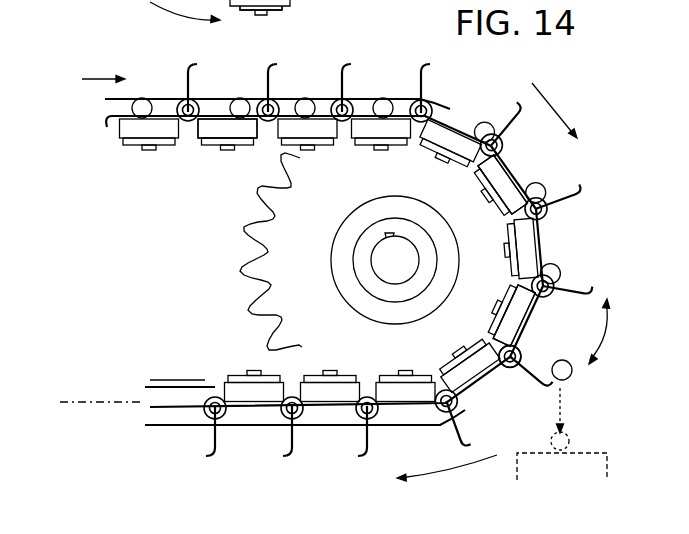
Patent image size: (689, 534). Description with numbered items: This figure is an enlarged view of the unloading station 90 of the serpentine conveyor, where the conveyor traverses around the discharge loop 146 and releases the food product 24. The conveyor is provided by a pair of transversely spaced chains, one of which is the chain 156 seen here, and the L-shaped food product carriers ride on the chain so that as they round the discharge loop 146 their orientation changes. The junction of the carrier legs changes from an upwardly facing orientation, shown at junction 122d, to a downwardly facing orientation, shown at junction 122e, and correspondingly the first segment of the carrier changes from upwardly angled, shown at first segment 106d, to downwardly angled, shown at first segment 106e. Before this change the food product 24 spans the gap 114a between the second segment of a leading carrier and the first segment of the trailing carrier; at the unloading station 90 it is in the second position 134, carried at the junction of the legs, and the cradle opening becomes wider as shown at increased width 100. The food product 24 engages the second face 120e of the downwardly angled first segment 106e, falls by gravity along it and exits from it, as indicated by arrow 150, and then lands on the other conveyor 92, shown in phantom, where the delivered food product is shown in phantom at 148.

The food product 24 is at (573, 368).
The unloading station 90 is at (470, 101).
The conveyor 92 is at (580, 452).
The increased width 100 is at (611, 335).
The first segment in upwardly angled orientation 106d is at (563, 192).
The first segment in downwardly angled orientation 106e is at (548, 383).
The gap 114a is at (298, 0).
The second face of the first segment 120e is at (533, 372).
The junction in upwardly facing orientation 122d is at (535, 190).
The junction in downwardly facing orientation 122e is at (528, 357).
The second position 134 is at (561, 270).
The discharge loop 146 is at (268, 240).
The food product in phantom on conveyor 148 is at (565, 437).
The arrow 150 is at (563, 402).
The chain 156 is at (205, 140).